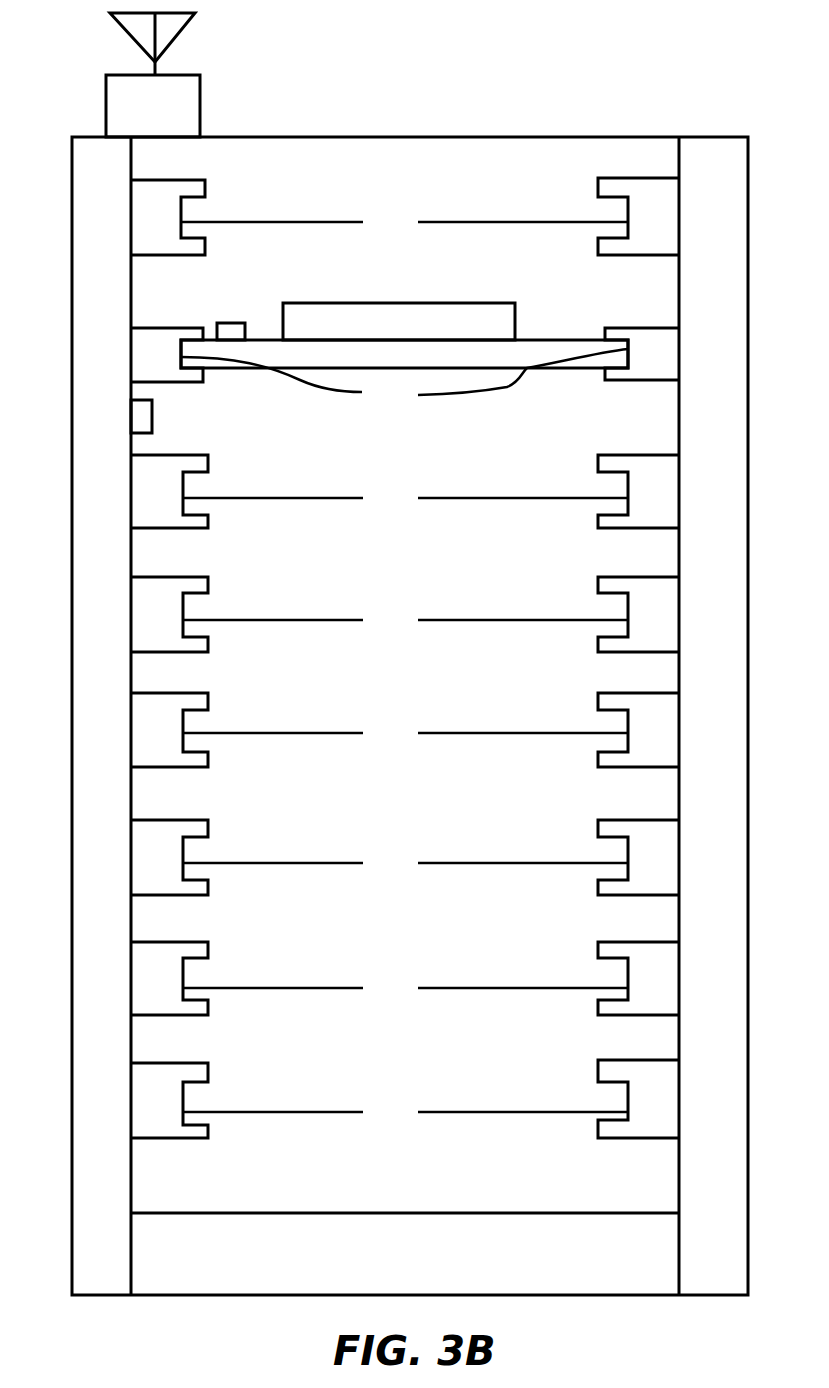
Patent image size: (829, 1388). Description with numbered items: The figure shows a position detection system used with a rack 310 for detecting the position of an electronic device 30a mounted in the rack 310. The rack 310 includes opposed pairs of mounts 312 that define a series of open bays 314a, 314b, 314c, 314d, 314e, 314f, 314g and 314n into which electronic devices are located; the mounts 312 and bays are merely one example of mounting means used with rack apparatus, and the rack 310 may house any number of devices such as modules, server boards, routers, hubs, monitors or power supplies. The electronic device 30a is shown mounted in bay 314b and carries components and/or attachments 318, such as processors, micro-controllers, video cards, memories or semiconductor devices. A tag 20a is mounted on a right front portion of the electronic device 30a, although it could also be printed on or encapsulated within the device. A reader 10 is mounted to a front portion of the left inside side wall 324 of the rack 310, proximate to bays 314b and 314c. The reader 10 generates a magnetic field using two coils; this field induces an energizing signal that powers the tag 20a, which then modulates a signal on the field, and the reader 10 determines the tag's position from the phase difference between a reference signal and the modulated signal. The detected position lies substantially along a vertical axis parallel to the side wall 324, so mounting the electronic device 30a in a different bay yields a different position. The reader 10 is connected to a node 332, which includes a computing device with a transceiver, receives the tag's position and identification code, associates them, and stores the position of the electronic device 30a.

The rack 310 is at (628, 104).
The mounts 312 is at (178, 237).
The bay 314a is at (404, 224).
The bay 314b is at (404, 375).
The bay 314c is at (405, 500).
The bay 314d is at (405, 622).
The bay 314e is at (405, 735).
The bay 314f is at (405, 865).
The bay 314g is at (405, 990).
The bay 314n is at (405, 1114).
The components and/or attachments 318 is at (415, 333).
The tag 20a is at (233, 322).
The electronic device 30a is at (563, 345).
The reader 10 is at (145, 418).
The side wall 324 is at (131, 1168).
The node 332 is at (196, 128).